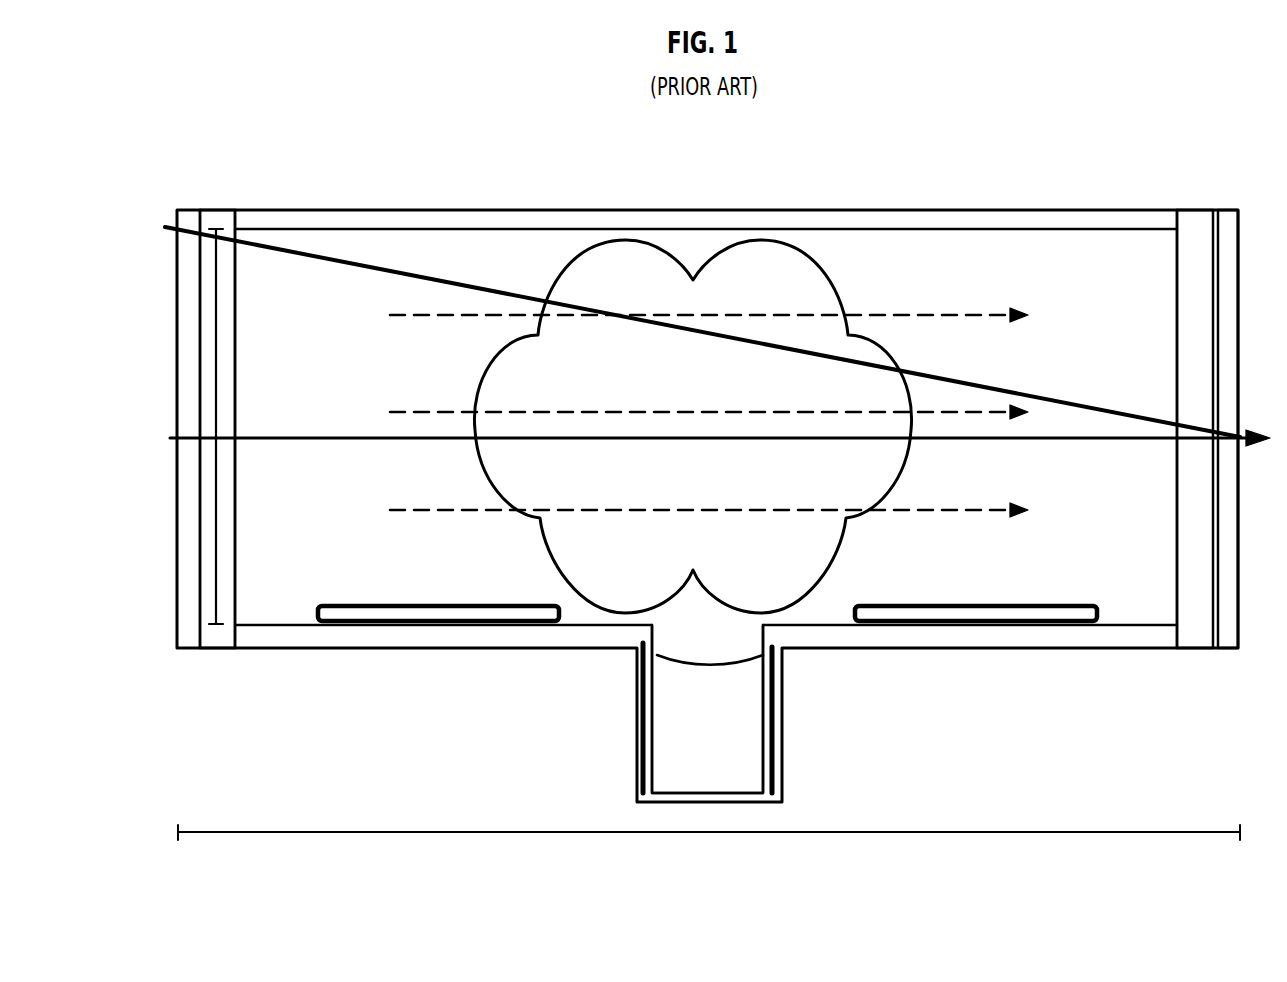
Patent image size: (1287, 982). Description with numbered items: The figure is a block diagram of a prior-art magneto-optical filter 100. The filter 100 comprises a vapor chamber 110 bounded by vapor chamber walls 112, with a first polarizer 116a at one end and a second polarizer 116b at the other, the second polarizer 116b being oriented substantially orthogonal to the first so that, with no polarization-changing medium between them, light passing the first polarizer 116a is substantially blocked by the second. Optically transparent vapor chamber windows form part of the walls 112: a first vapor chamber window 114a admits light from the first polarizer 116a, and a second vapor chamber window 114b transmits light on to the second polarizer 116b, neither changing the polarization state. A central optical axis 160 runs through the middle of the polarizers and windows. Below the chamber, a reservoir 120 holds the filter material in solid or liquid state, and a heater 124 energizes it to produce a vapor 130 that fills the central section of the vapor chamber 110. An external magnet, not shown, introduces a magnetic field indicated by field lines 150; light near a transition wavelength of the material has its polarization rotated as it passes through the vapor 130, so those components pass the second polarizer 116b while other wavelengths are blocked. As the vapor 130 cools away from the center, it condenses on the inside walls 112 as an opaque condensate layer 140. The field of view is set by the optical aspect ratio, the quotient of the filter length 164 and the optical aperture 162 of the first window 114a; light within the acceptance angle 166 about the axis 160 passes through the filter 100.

The magneto-optical filter 100 is at (804, 178).
The vapor chamber 110 is at (1078, 266).
The vapor chamber walls 112 is at (298, 733).
The first vapor chamber window 114a is at (240, 275).
The second vapor chamber window 114b is at (1208, 280).
The first polarizer 116a is at (186, 215).
The second polarizer 116b is at (1229, 230).
The reservoir 120 is at (722, 704).
The heater 124 is at (643, 757).
The vapor 130 is at (715, 366).
The condensate layer 140 is at (485, 606).
The field lines from external magnet 150 is at (962, 315).
The central optical axis 160 is at (298, 442).
The optical aperture 162 is at (217, 320).
The filter length 164 is at (912, 832).
The acceptance angle 166 is at (1112, 412).